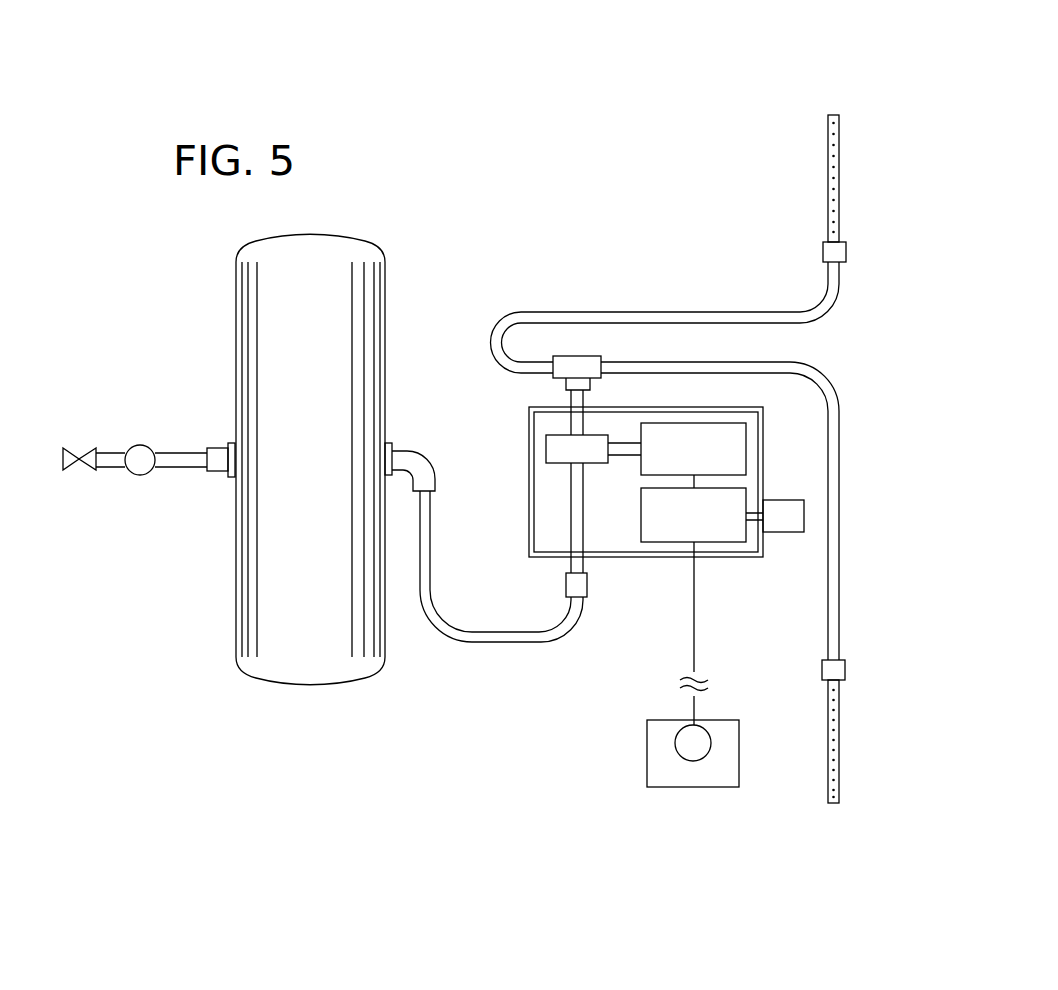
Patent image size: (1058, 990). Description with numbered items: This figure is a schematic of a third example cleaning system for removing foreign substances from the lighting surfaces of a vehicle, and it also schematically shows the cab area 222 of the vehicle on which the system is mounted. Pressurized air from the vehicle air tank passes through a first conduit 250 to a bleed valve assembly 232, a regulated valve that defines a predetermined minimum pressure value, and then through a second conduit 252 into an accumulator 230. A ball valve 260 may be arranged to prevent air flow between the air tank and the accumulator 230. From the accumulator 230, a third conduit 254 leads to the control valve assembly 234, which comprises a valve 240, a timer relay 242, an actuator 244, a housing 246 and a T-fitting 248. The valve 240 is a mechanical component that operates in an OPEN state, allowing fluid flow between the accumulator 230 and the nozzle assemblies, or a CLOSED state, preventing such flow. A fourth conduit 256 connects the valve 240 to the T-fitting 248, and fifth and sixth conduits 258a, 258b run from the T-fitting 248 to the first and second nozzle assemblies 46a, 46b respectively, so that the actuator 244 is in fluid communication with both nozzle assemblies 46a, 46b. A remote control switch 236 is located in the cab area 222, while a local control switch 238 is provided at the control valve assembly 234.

The first nozzle assembly 46a is at (822, 117).
The second nozzle assembly 46b is at (820, 804).
The cab area 222 is at (660, 773).
The accumulator 230 is at (250, 330).
The bleed valve assembly 232 is at (140, 445).
The control valve assembly 234 is at (631, 485).
The remote control switch 236 is at (675, 748).
The local control switch 238 is at (787, 500).
The valve 240 is at (546, 457).
The timer relay 242 is at (737, 533).
The actuator 244 is at (705, 423).
The housing 246 is at (529, 502).
The T-fitting 248 is at (583, 362).
The first conduit 250 is at (112, 468).
The second conduit 252 is at (172, 468).
The third conduit 254 is at (515, 642).
The fourth conduit 256 is at (578, 423).
The fifth conduit 258a is at (677, 312).
The sixth conduit 258b is at (762, 362).
The ball valve 260 is at (75, 449).